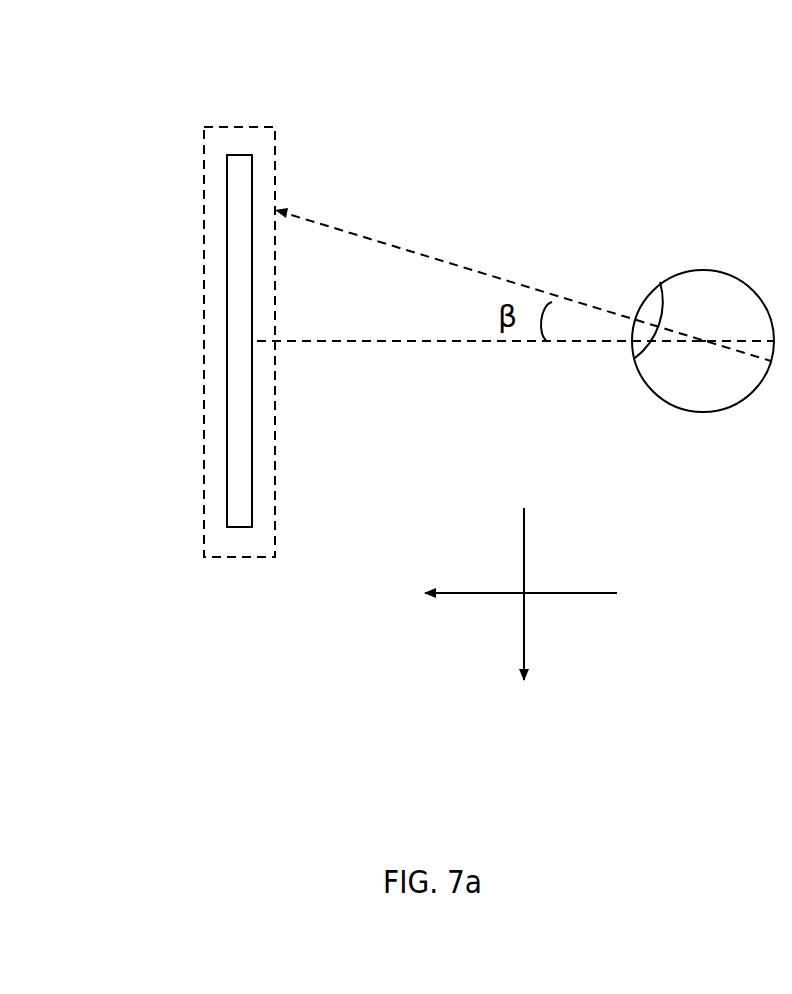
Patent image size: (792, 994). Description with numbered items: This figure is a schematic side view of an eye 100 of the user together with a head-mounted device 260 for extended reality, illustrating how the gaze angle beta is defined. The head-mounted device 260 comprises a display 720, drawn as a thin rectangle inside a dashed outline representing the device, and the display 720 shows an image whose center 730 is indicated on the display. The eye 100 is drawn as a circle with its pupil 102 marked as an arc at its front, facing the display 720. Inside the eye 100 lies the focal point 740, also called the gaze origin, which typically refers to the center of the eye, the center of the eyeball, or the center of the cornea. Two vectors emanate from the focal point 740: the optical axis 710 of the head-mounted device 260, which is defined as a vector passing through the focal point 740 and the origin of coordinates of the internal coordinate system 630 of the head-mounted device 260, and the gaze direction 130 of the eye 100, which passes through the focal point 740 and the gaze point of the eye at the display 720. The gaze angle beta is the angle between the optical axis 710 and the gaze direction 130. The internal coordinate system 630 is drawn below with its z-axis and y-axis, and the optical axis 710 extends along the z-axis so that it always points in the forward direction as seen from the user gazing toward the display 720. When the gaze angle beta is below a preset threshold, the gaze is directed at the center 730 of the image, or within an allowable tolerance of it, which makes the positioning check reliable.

The head-mounted device 260 is at (213, 127).
The display 720 is at (252, 177).
The center of an image displayed on the display 730 is at (252, 343).
The optical axis 710 is at (425, 340).
The gaze direction 130 is at (423, 257).
The eye 100 is at (702, 252).
The pupil 102 is at (650, 307).
The focal point 740 is at (703, 349).
The internal coordinate system 630 is at (445, 539).